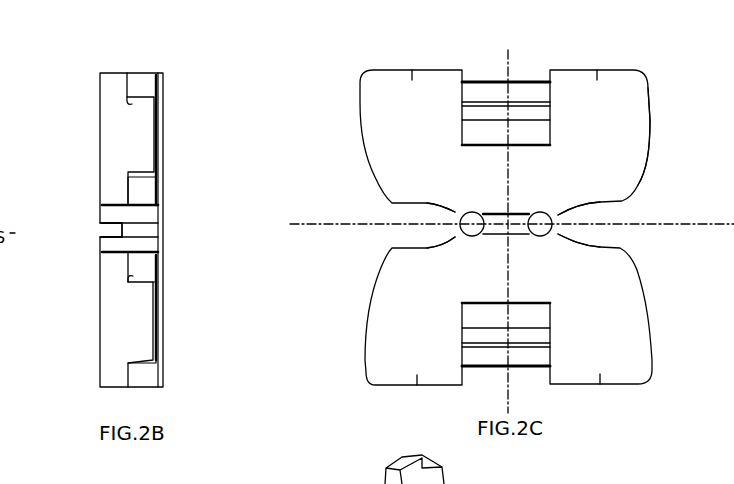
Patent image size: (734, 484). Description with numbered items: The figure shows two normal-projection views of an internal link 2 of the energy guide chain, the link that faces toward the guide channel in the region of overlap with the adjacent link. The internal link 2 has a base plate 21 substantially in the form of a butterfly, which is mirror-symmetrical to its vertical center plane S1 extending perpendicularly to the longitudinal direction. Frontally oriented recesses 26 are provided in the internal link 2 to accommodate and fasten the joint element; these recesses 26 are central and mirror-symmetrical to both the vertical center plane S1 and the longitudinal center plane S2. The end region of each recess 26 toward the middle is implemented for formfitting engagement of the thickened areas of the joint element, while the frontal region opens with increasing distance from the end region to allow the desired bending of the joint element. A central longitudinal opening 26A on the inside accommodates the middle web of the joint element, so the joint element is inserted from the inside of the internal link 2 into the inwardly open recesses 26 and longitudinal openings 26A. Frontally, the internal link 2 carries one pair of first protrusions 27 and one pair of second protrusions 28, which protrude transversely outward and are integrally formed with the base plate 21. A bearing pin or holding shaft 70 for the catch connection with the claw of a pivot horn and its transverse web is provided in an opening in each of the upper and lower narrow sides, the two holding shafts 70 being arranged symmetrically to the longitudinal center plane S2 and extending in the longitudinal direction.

In FIG. 2B, the internal link 2 is at (90, 356).
In FIG. 2C, the internal link 2 is at (674, 385).
In FIG. 2B, the base plate 21 is at (128, 63).
In FIG. 2C, the base plate 21 is at (635, 131).
In FIG. 2C, the recesses 26 is at (412, 242).
In FIG. 2B, the central longitudinal opening 26A is at (100, 234).
In FIG. 2C, the central longitudinal opening 26A is at (517, 213).
In FIG. 2B, the first protrusions 27 is at (138, 150).
In FIG. 2B, the second protrusions 28 is at (140, 322).
In FIG. 2C, the holding shaft 70 is at (523, 87).
In FIG. 2C, the vertical center plane S1 is at (496, 222).
In FIG. 2C, the longitudinal center plane S2 is at (512, 236).